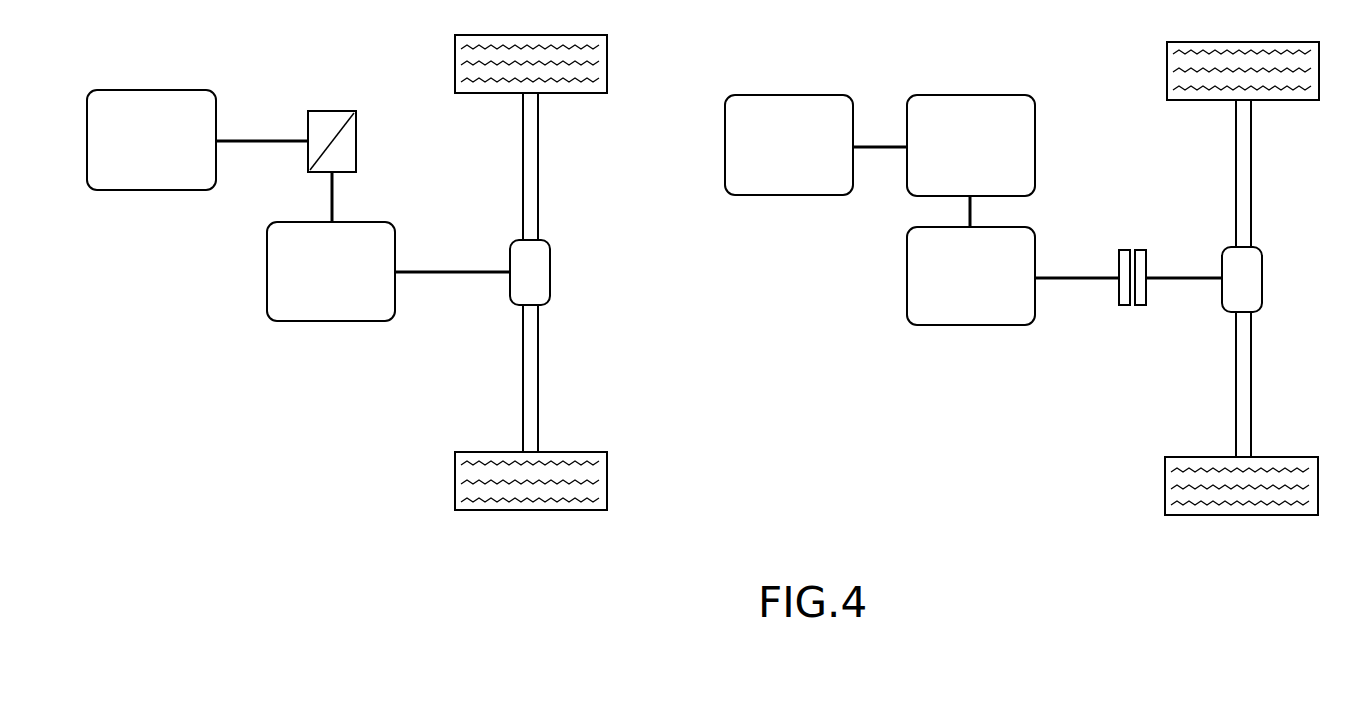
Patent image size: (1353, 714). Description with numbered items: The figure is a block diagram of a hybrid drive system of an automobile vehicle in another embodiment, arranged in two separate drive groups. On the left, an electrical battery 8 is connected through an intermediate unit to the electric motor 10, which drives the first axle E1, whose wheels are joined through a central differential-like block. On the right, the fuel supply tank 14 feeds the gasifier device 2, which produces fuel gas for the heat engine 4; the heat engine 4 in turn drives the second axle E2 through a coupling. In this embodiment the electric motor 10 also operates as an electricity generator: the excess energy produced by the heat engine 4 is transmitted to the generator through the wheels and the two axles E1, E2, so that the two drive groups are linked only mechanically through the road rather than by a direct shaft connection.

The electrical battery 8 is at (160, 180).
The electric motor 10 is at (332, 310).
The axle E1 is at (530, 343).
The fuel supply tank 14 is at (765, 108).
The gasifier device 2 is at (995, 110).
The heat engine 4 is at (994, 312).
The axle E2 is at (1247, 147).